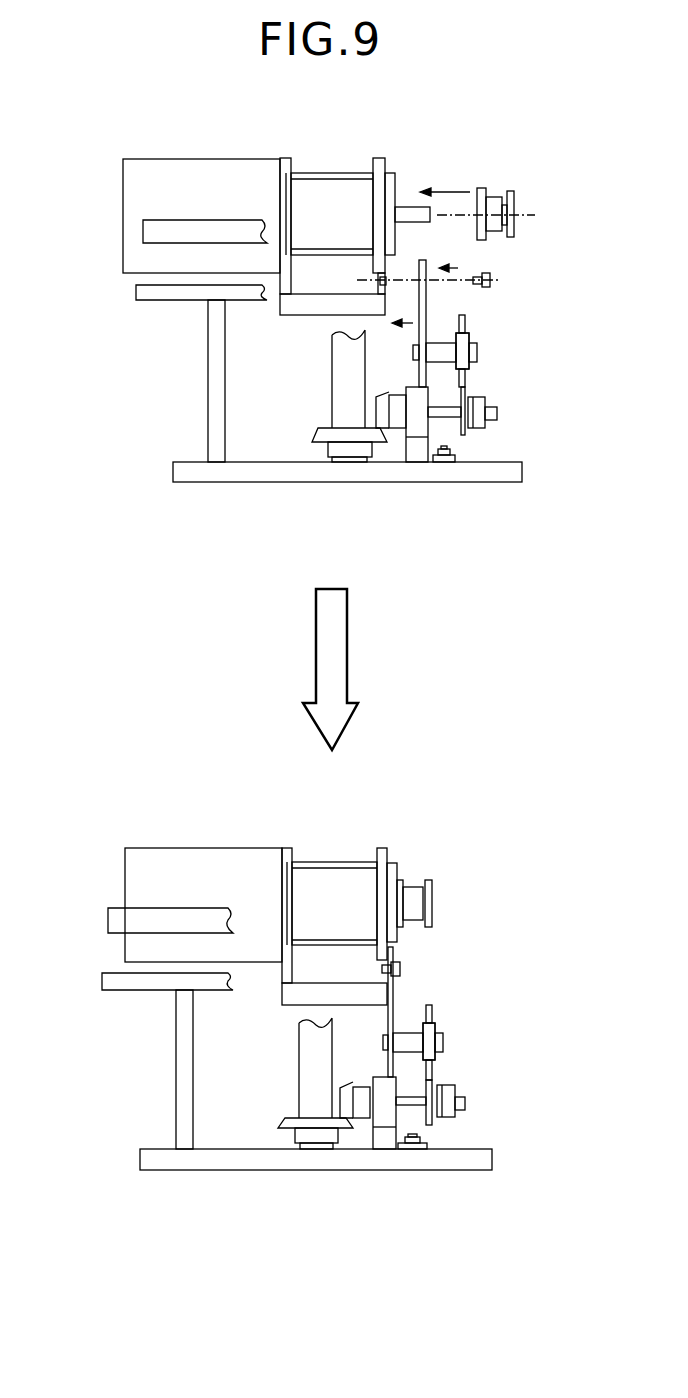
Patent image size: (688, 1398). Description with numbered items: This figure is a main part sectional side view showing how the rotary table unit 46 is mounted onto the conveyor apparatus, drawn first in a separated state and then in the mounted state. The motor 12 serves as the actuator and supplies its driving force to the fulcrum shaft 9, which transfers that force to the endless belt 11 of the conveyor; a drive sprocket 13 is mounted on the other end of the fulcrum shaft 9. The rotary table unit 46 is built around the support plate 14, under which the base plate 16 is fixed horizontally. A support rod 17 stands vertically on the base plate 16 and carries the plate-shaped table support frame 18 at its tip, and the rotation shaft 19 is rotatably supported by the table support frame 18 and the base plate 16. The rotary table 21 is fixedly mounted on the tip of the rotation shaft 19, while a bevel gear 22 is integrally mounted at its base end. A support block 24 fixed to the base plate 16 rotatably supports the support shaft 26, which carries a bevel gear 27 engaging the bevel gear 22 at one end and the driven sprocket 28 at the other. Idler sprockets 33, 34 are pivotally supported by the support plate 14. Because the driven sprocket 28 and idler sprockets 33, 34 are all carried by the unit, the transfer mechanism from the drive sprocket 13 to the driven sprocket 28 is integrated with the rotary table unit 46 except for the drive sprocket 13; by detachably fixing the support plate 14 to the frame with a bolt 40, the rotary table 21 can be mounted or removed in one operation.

The fulcrum shaft 9 is at (355, 190).
The endless belt 11 is at (305, 173).
The motor 12 is at (148, 165).
The drive sprocket 13 is at (495, 197).
The support plate 14 is at (425, 262).
The base plate 16 is at (252, 474).
The support rod 17 is at (217, 388).
The table support frame 18 is at (150, 302).
The rotation shaft 19 is at (347, 363).
The rotary table 21 is at (160, 233).
The bevel gear 22 is at (320, 430).
The support block 24 is at (417, 452).
The support shaft 26 is at (443, 415).
The bevel gear 27 is at (397, 407).
The driven sprocket 28 is at (478, 397).
The idler sprocket 33 is at (466, 325).
The idler sprocket 34 is at (446, 696).
The bolt 40 is at (490, 270).
The rotary table unit 46 is at (161, 449).